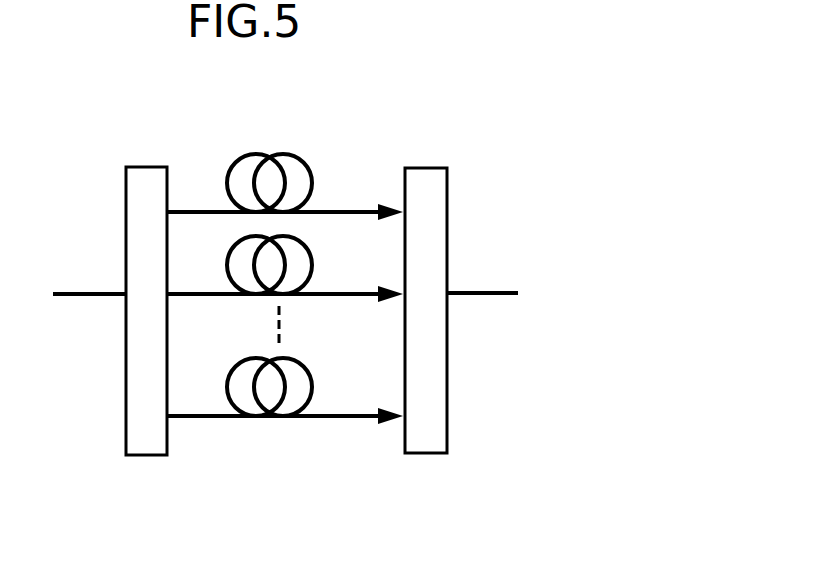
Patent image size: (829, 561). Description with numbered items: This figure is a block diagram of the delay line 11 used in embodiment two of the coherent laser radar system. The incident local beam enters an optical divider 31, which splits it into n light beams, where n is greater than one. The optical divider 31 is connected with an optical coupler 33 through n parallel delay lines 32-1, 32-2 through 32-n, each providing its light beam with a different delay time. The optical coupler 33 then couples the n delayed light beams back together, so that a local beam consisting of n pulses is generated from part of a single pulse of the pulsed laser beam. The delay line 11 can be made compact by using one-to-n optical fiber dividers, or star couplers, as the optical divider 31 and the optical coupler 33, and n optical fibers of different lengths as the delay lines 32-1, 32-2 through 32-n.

The delay line 11 is at (463, 149).
The optical divider 31 is at (126, 191).
The delay line 32-1 is at (313, 174).
The delay line 32-2 is at (313, 257).
The delay line 32-n is at (313, 378).
The optical coupler 33 is at (448, 194).